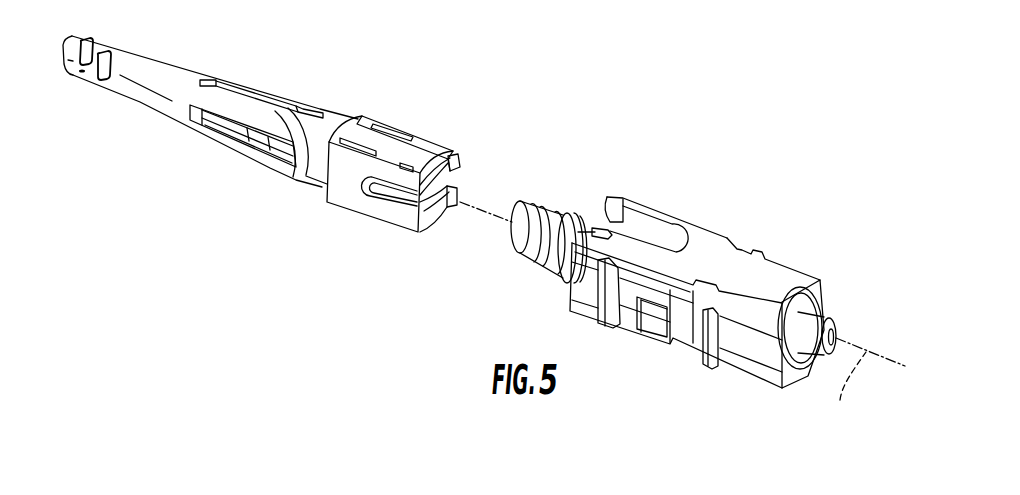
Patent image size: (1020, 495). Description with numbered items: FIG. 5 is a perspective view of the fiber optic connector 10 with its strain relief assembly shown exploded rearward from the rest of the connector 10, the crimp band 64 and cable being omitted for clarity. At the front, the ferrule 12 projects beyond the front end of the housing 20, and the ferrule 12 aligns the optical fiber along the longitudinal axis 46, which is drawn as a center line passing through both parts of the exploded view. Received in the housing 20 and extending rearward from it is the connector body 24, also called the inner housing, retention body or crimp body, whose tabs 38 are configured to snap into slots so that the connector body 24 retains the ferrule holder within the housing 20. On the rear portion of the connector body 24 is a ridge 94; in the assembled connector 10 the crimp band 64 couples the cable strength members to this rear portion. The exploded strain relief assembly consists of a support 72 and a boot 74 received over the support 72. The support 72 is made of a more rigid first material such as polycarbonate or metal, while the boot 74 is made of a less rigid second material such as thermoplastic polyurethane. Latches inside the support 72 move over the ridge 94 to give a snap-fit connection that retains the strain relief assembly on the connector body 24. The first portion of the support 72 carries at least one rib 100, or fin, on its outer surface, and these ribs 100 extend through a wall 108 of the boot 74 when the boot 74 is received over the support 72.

The connector 10 is at (336, 58).
The ferrule 12 is at (834, 302).
The housing 20 is at (722, 232).
The connector body 24 is at (520, 268).
The tabs 38 is at (644, 228).
The longitudinal axis 46 is at (849, 391).
The crimp band 64 is at (552, 208).
The support 72 is at (396, 118).
The boot 74 is at (272, 84).
The ridge 94 is at (584, 212).
The rib 100 is at (443, 140).
The wall 108 is at (462, 158).